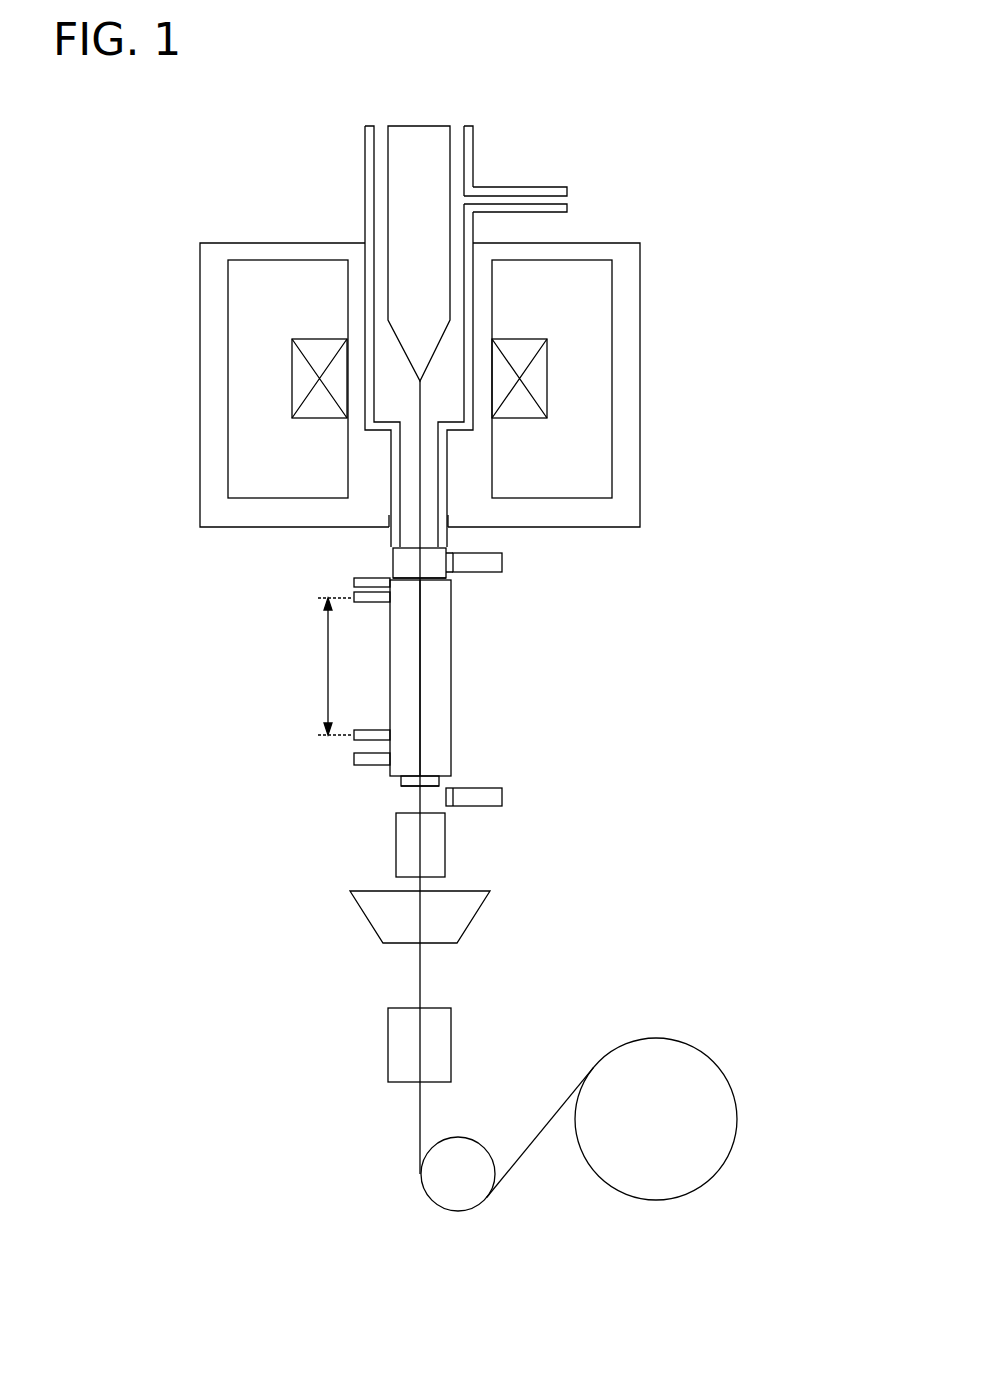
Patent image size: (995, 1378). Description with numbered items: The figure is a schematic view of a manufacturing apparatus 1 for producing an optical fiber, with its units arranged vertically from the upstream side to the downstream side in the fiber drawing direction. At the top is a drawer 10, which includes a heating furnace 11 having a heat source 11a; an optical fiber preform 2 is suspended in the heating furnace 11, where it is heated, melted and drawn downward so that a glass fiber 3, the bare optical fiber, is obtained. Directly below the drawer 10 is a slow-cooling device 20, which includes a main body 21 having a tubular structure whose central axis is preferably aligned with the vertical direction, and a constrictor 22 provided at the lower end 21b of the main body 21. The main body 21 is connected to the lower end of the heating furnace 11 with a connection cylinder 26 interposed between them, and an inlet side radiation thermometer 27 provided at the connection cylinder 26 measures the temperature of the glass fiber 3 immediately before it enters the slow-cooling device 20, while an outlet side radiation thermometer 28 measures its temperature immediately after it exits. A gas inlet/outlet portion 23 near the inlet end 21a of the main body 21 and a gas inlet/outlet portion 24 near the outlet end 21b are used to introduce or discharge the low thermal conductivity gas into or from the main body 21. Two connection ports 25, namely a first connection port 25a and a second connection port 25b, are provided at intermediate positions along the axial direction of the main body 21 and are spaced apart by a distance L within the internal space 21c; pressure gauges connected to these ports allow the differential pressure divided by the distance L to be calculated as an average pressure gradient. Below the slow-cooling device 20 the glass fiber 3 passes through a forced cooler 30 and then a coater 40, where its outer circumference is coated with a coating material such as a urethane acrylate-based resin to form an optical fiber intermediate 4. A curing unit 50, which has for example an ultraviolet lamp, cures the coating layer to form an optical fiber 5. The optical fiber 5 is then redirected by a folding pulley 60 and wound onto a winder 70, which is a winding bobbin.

The manufacturing apparatus 1 is at (680, 125).
The optical fiber preform 2 is at (427, 168).
The glass fiber 3 is at (418, 465).
The optical fiber intermediate 4 is at (418, 970).
The optical fiber 5 is at (535, 1148).
The drawer 10 is at (475, 336).
The heating furnace 11 is at (640, 299).
The heat source 11a is at (535, 380).
The slow-cooling device 20 is at (377, 681).
The main body 21 is at (451, 650).
The inlet end 21a is at (407, 577).
The lower end 21b is at (408, 786).
The internal space 21c is at (437, 705).
The constrictor 22 is at (440, 779).
The gas inlet/outlet portion 23 is at (353, 583).
The gas inlet/outlet portion 24 is at (354, 760).
The connection ports 25 is at (274, 672).
The first connection port 25a is at (353, 596).
The connection port 25b is at (353, 735).
The connection cylinder 26 is at (393, 558).
The inlet side radiation thermometer 27 is at (502, 562).
The outlet side radiation thermometer 28 is at (502, 797).
The forced cooler 30 is at (445, 843).
The coater 40 is at (476, 918).
The curing unit 50 is at (451, 1040).
The folding pulley 60 is at (468, 1137).
The winder 70 is at (690, 1044).